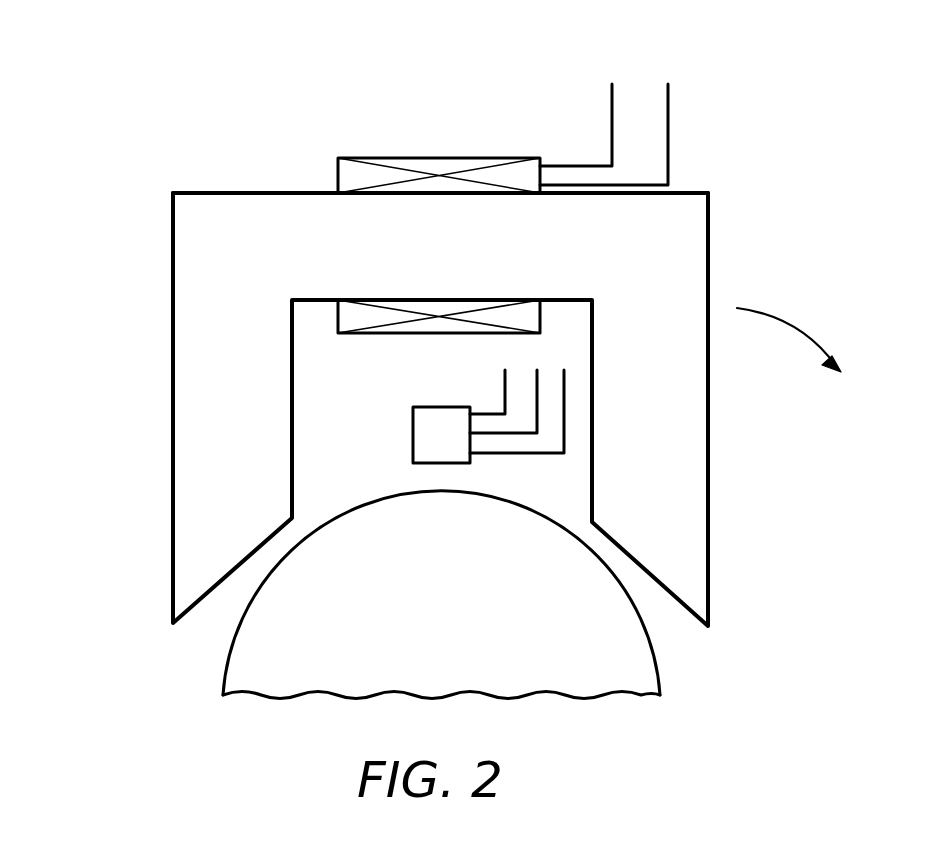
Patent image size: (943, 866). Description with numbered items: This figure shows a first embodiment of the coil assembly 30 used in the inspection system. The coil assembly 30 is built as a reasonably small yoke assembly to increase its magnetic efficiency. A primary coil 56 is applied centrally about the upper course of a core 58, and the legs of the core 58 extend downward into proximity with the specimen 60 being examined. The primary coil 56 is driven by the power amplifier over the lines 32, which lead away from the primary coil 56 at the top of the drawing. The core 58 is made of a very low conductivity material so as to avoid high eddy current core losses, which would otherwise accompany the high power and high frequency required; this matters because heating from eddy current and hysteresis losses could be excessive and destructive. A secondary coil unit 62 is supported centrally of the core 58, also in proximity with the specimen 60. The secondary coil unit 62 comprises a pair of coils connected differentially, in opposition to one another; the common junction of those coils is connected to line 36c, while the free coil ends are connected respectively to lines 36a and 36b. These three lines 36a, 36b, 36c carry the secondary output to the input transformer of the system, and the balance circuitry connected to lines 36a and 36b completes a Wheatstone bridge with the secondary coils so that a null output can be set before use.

The coil assembly 30 is at (171, 374).
The lines 32 is at (612, 90).
The input line 36a is at (510, 380).
The input line 36b is at (567, 405).
The input line 36c is at (502, 432).
The primary coil 56 is at (425, 178).
The core 58 is at (683, 243).
The specimen 60 is at (463, 620).
The secondary coil unit 62 is at (427, 412).